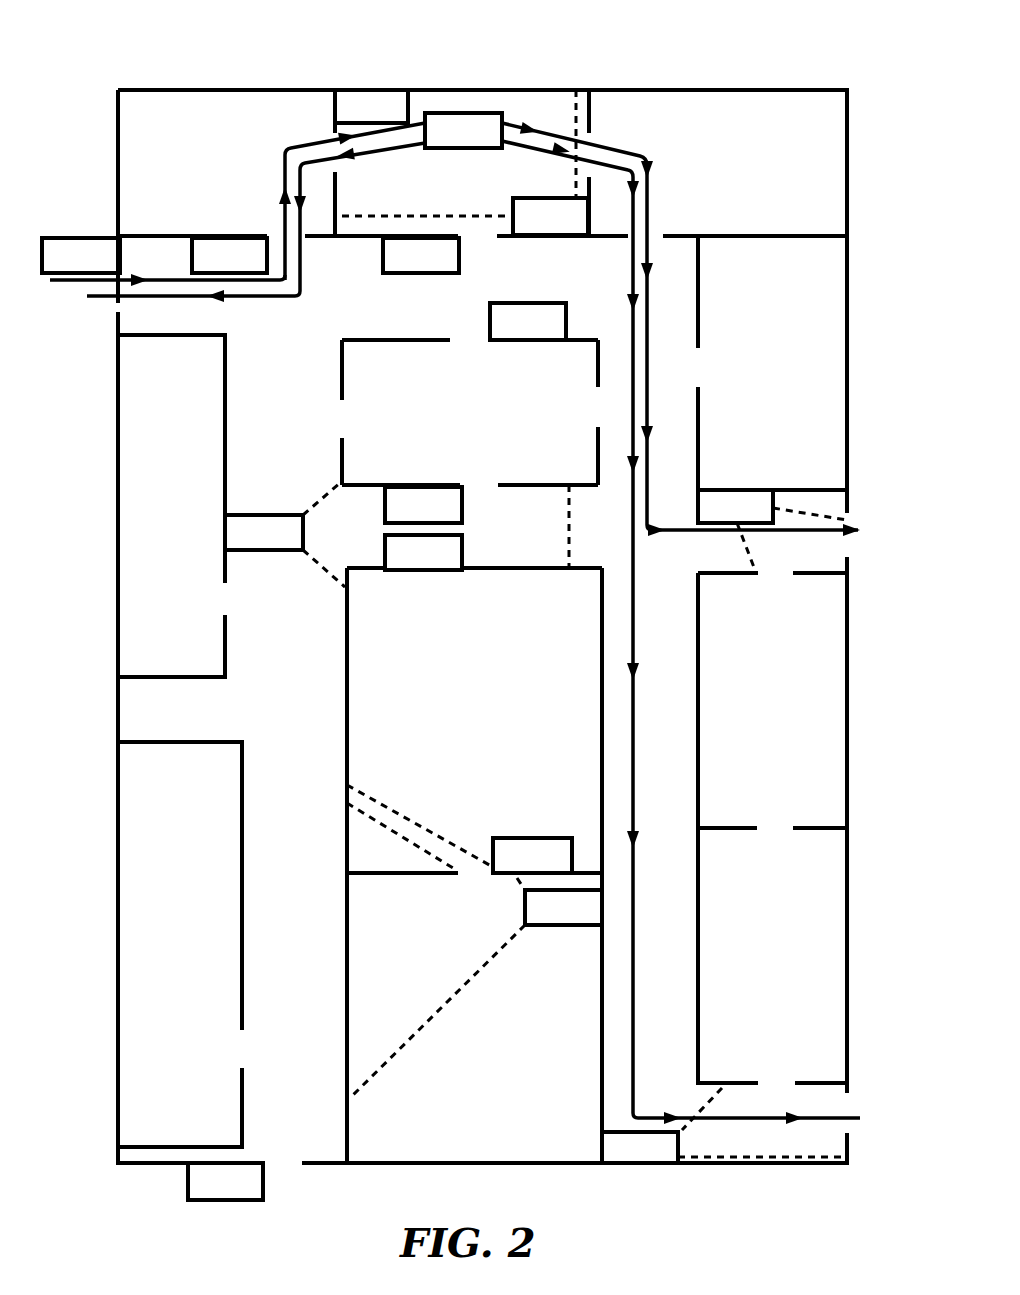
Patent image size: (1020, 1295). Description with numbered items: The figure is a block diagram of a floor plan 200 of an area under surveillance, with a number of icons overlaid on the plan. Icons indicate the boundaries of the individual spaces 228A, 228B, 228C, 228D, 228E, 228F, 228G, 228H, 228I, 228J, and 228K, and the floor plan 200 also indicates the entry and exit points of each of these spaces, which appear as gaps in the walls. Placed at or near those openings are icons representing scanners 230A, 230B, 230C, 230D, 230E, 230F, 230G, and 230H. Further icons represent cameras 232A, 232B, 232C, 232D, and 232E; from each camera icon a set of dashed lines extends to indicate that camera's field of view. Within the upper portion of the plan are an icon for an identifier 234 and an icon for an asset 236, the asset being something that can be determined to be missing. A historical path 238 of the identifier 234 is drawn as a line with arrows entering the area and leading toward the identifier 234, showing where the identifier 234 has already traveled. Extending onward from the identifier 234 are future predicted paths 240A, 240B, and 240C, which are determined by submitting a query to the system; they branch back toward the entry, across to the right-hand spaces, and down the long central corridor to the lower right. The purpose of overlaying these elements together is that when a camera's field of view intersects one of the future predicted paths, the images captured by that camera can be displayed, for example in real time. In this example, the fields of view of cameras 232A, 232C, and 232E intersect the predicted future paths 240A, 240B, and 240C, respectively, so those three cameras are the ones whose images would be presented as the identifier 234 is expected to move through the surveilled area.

The floor plan 200 is at (195, 60).
The space 228A is at (373, 179).
The space 228B is at (465, 163).
The space 228C is at (755, 192).
The space 228D is at (470, 454).
The space 228E is at (171, 506).
The space 228F is at (772, 363).
The space 228G is at (772, 700).
The space 228H is at (474, 865).
The space 228I is at (180, 944).
The space 228J is at (474, 958).
The space 228K is at (772, 955).
The scanner 230A is at (229, 255).
The scanner 230B is at (421, 255).
The scanner 230C is at (528, 321).
The scanner 230D is at (423, 505).
The scanner 230E is at (423, 552).
The scanner 230F is at (532, 855).
The scanner 230G is at (225, 1181).
The scanner 230H is at (81, 255).
The camera 232A is at (550, 216).
The camera 232B is at (285, 535).
The camera 232C is at (772, 530).
The camera 232D is at (474, 941).
The camera 232E is at (724, 1125).
The identifier 234 is at (463, 130).
The asset 236 is at (371, 106).
The historical path 238 is at (283, 150).
The future predicted path 240A is at (262, 298).
The future predicted path 240B is at (700, 531).
The future predicted path 240C is at (633, 327).